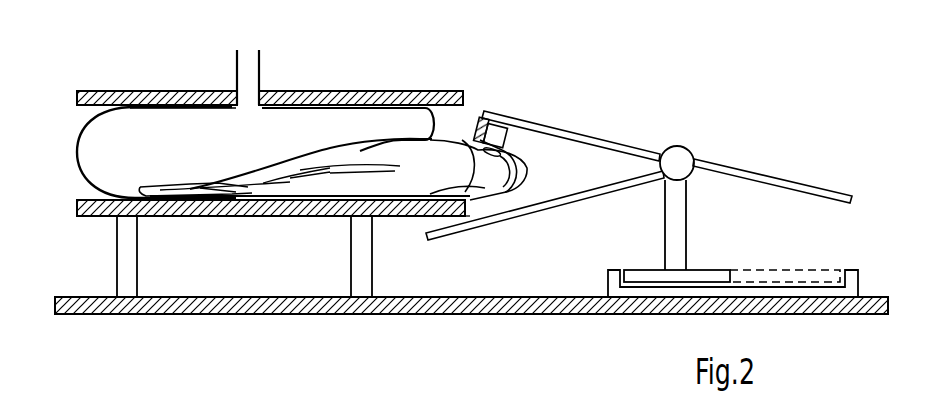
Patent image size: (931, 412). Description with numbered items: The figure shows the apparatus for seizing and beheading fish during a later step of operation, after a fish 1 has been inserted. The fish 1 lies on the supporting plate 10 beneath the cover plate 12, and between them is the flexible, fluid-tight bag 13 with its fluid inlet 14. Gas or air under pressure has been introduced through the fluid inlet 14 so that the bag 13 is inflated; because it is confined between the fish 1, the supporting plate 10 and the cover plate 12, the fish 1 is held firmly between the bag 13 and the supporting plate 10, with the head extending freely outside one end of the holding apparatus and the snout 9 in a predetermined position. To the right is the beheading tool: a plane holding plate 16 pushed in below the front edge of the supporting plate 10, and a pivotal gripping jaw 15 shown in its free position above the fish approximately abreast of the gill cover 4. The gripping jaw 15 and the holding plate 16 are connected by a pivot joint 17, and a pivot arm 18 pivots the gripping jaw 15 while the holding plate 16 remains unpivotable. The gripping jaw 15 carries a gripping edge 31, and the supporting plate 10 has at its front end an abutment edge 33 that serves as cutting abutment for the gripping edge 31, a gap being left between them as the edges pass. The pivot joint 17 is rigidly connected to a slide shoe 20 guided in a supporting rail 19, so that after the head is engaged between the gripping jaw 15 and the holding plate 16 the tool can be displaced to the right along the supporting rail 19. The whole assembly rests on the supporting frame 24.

The fish 1 is at (458, 181).
The gill cover 4 is at (471, 150).
The fish snout 9 is at (530, 169).
The supporting plate 10 is at (249, 217).
The cover plate 12 is at (143, 91).
The flexible fluid-tight bag 13 is at (77, 138).
The fluid inlet 14 is at (236, 70).
The gripping jaw 15 is at (581, 129).
The holding plate 16 is at (561, 200).
The pivot joint 17 is at (687, 147).
The pivot arm 18 is at (820, 184).
The supporting rail 19 is at (845, 268).
The slide shoe 20 is at (722, 270).
The supporting frame 24 is at (211, 292).
The gripping edge 31 is at (481, 113).
The abutment edge 33 is at (470, 217).